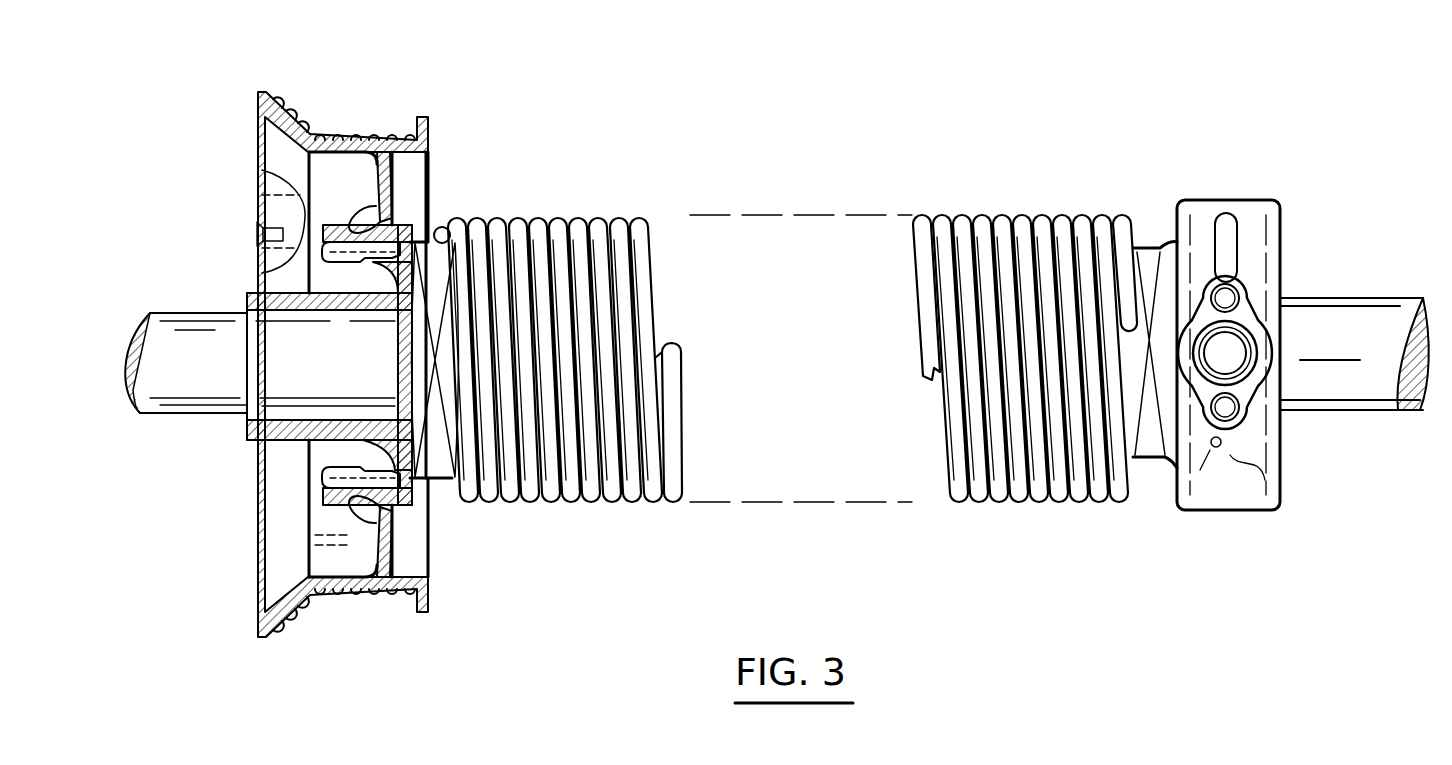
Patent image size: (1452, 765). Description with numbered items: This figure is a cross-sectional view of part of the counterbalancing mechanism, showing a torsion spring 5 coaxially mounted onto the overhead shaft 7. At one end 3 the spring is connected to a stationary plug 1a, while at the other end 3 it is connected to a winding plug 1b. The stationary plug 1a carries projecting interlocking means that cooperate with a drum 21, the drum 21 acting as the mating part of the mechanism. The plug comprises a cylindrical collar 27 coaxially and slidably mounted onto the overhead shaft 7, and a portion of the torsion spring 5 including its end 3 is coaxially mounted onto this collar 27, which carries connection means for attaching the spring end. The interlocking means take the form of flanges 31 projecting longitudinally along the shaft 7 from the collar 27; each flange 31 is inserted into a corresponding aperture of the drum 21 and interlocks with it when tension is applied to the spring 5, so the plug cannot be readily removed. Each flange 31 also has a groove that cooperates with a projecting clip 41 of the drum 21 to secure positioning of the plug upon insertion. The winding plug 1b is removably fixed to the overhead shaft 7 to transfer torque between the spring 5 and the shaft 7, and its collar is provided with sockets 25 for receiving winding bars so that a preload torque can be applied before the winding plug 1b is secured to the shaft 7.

The stationary plug 1a is at (460, 218).
The winding plug 1b is at (1238, 200).
The spring end 3 is at (502, 214).
The torsion spring 5 is at (950, 212).
The overhead shaft 7 is at (198, 398).
The drum 21 is at (276, 156).
The sockets 25 is at (1238, 362).
The cylindrical collar 27 is at (432, 480).
The flange 31 is at (335, 250).
The projecting clip 41 is at (373, 213).